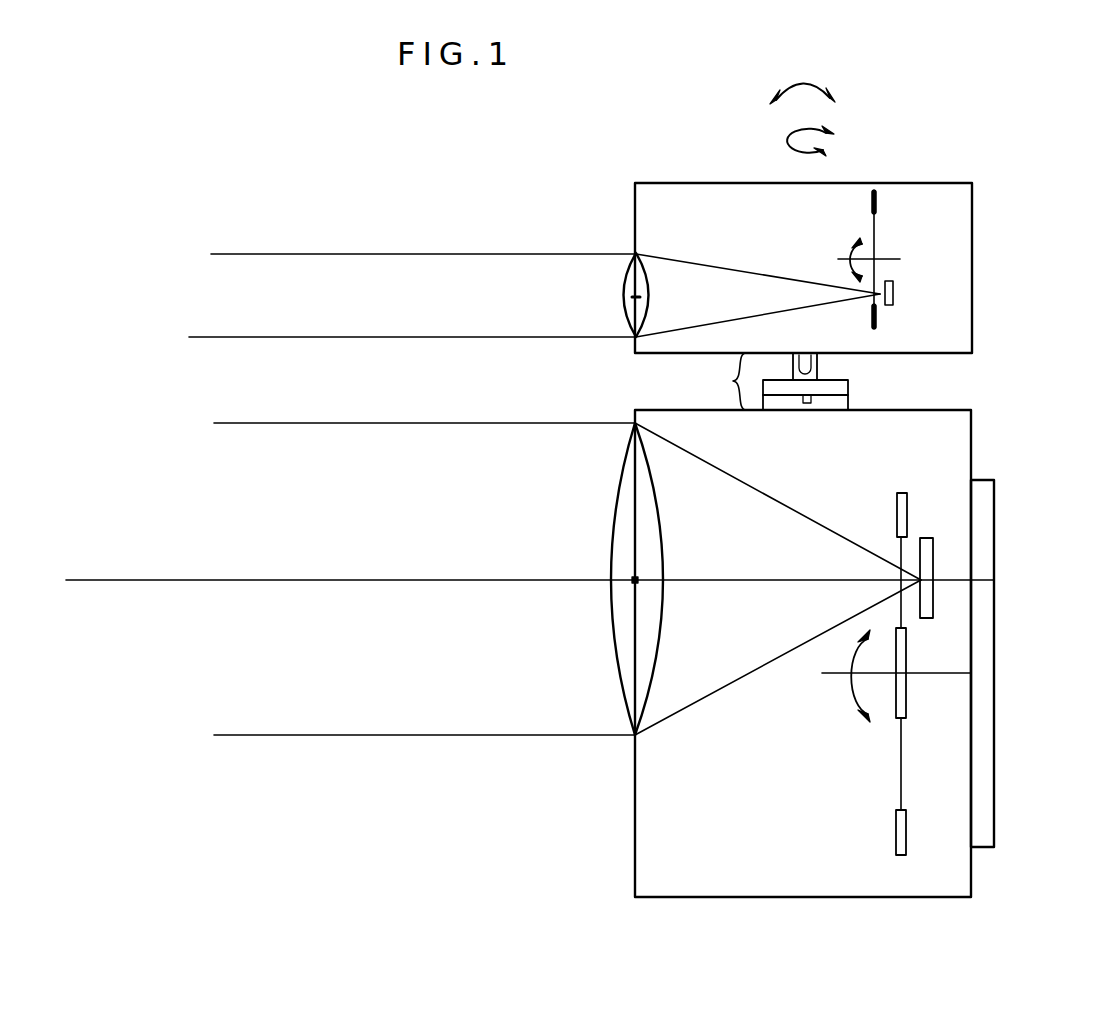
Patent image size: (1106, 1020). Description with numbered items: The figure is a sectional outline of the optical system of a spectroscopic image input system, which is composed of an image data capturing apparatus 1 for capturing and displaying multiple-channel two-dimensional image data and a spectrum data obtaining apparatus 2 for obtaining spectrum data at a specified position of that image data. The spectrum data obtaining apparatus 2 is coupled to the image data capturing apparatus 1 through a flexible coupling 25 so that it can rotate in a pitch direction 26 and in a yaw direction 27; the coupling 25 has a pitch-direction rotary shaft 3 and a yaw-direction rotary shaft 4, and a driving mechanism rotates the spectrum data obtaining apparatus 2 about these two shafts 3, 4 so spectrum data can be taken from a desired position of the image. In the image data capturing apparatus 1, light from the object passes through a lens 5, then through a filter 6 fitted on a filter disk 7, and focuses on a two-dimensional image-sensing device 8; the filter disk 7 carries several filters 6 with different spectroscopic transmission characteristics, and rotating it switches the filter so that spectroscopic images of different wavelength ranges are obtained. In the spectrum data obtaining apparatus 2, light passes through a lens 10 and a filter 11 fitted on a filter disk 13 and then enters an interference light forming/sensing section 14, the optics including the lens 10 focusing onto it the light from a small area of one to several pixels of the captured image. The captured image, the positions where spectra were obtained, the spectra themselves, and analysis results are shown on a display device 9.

The image data capturing apparatus 1 is at (971, 452).
The spectrum data obtaining apparatus 2 is at (972, 238).
The pitch-direction rotary shaft 3 is at (804, 364).
The yaw-direction rotary shaft 4 is at (811, 399).
The lens 5 is at (632, 692).
The filter 6 is at (901, 622).
The filter disk 7 is at (906, 693).
The two-dimensional image-sensing device 8 is at (933, 598).
The display device 9 is at (994, 528).
The lens 10 is at (637, 308).
The filter 11 is at (874, 214).
The filter disk 13 is at (874, 252).
The interference light forming/sensing section 14 is at (893, 291).
The flexible coupling 25 is at (713, 381).
The pitch direction 26 is at (828, 78).
The yaw direction 27 is at (808, 156).